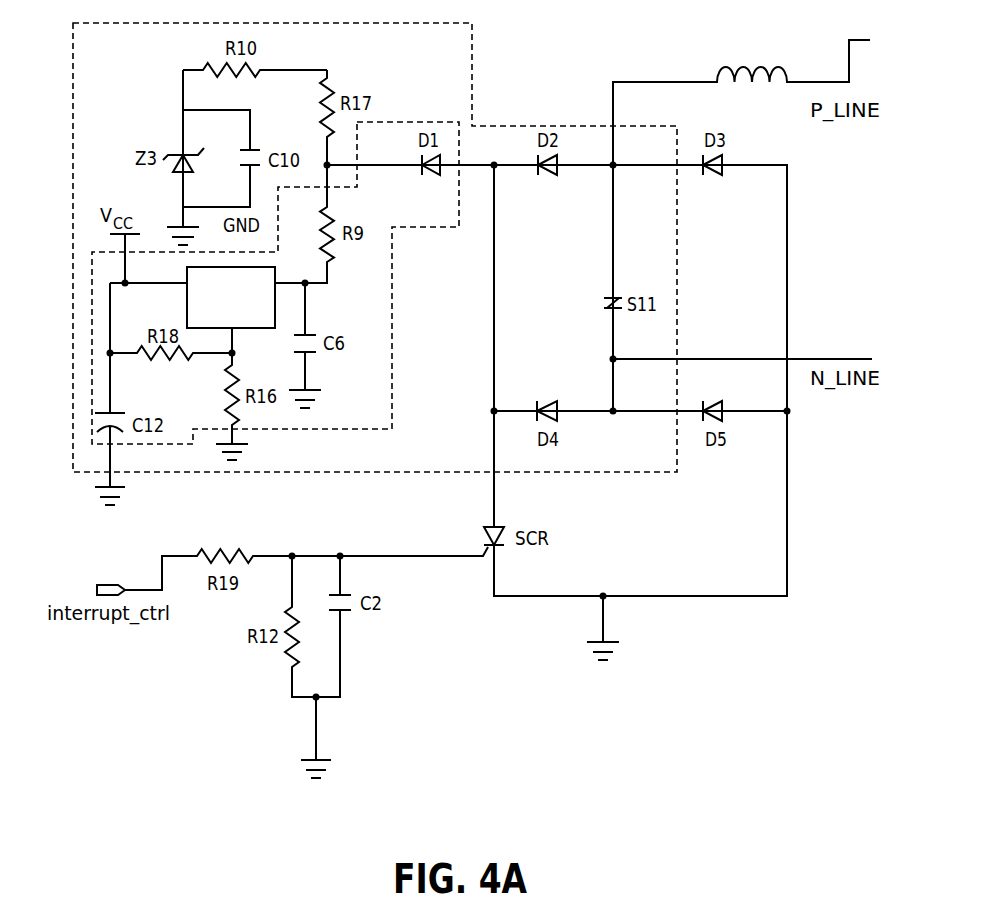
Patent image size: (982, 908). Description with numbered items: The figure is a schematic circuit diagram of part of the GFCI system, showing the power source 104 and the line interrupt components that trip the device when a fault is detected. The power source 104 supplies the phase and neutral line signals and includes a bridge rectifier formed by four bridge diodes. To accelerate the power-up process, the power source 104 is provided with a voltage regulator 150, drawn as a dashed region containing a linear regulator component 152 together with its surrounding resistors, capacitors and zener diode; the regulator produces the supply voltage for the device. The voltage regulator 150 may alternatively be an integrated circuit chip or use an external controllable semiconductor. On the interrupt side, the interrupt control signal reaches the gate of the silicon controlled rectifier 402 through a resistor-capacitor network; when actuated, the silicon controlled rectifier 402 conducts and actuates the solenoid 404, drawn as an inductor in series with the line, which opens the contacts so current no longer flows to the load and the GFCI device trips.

The power source 104 is at (627, 472).
The voltage regulator 150 is at (394, 312).
The linear regulator component 152 is at (187, 318).
The SCR 402 is at (482, 526).
The solenoid 404 is at (777, 63).